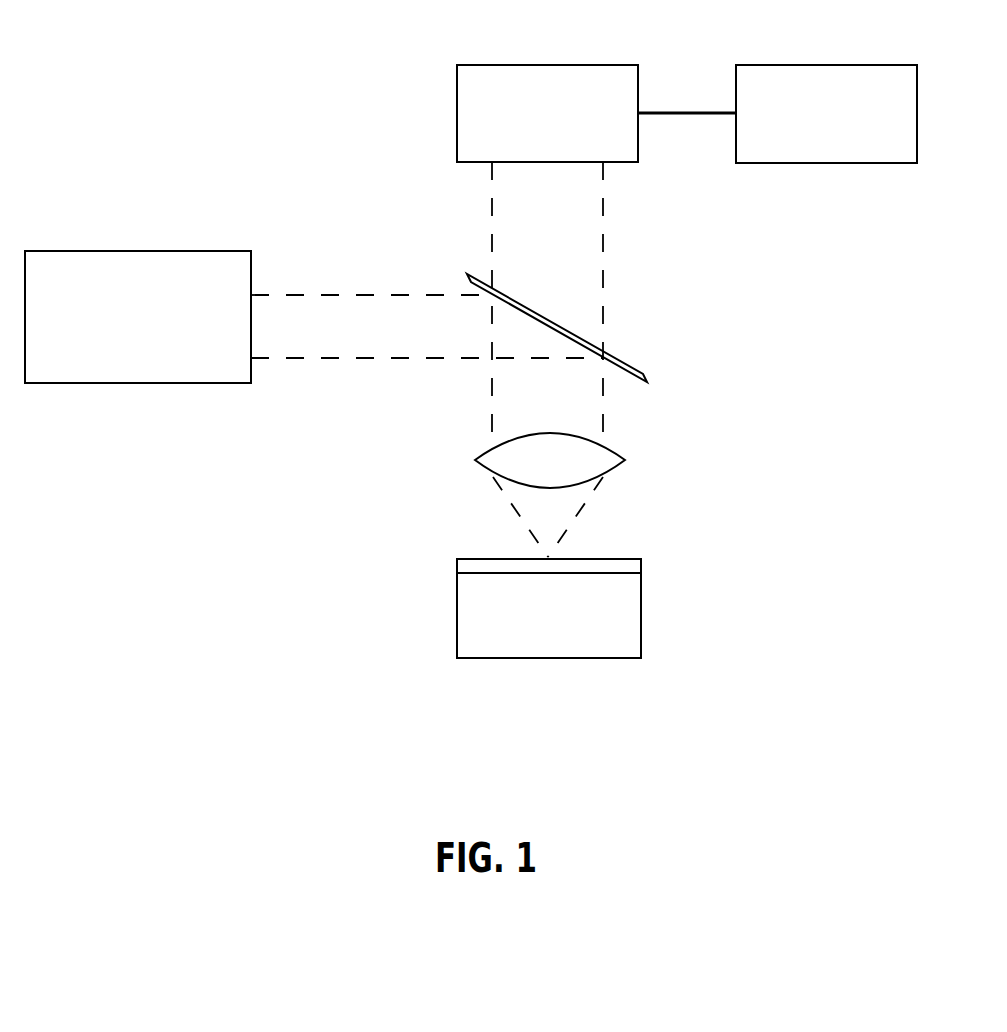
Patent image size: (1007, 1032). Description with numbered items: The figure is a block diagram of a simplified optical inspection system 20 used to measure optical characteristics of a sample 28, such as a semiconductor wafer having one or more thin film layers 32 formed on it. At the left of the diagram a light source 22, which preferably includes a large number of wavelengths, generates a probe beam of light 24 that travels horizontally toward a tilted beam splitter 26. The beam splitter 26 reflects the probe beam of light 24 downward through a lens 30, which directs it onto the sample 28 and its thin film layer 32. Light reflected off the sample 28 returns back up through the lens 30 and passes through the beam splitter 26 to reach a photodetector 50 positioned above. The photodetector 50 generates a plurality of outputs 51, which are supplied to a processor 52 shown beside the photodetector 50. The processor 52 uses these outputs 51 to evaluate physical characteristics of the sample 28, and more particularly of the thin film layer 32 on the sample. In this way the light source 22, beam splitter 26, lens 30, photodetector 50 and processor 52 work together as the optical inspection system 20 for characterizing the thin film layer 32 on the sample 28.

The optical inspection system 20 is at (744, 255).
The light source 22 is at (125, 251).
The probe beam of light 24 is at (334, 295).
The beam splitter 26 is at (625, 358).
The sample 28 is at (641, 597).
The lens 30 is at (606, 448).
The thin film layer 32 is at (625, 559).
The photodetector 50 is at (522, 65).
The outputs 51 is at (669, 112).
The processor 52 is at (779, 65).